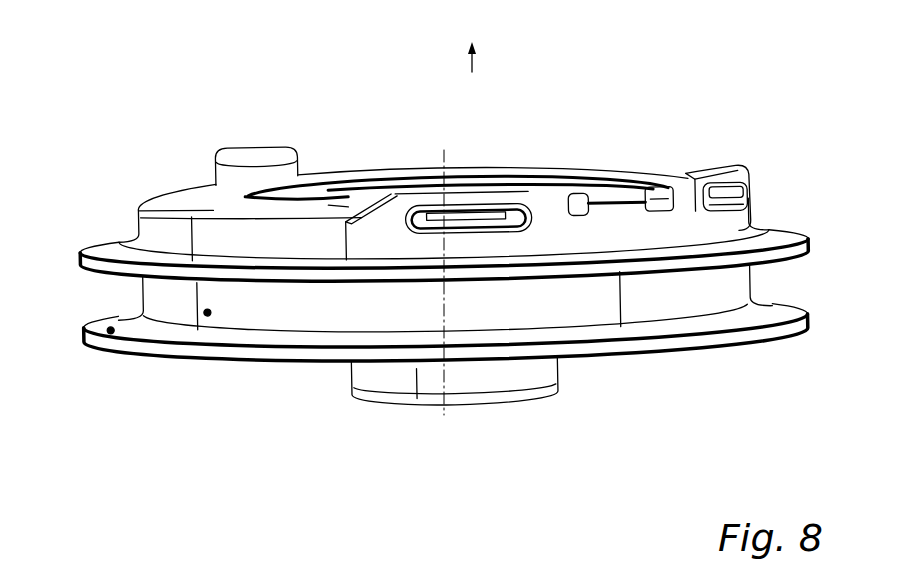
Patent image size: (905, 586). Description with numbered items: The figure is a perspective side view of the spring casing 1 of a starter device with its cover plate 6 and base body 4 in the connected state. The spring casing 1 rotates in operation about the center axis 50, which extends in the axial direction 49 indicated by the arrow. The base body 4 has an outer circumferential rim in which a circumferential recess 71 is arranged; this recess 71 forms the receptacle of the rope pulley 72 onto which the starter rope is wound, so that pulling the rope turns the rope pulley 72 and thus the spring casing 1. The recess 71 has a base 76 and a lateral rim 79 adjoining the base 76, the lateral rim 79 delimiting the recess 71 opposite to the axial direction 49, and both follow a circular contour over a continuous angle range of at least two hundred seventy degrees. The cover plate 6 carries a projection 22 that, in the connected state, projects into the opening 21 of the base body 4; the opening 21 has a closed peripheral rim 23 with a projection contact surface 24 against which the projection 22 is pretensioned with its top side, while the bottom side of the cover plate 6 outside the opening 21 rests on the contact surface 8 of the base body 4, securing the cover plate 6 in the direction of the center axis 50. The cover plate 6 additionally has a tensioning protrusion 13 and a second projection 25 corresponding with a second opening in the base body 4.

The spring casing 1 is at (154, 71).
The base body 4 is at (185, 377).
The cover plate 6 is at (184, 192).
The contact surface 8 is at (648, 204).
The tensioning protrusion 13 is at (607, 203).
The opening 21 is at (525, 231).
The projection 22 is at (463, 220).
The peripheral rim 23 is at (428, 233).
The projection contact surface 24 is at (514, 206).
The second projection 25 is at (748, 193).
The axial direction 49 is at (474, 60).
The center axis 50 is at (445, 157).
The circumferential recess 71 is at (143, 303).
The rope pulley 72 is at (279, 333).
The base 76 is at (204, 315).
The lateral rim 79 is at (107, 328).